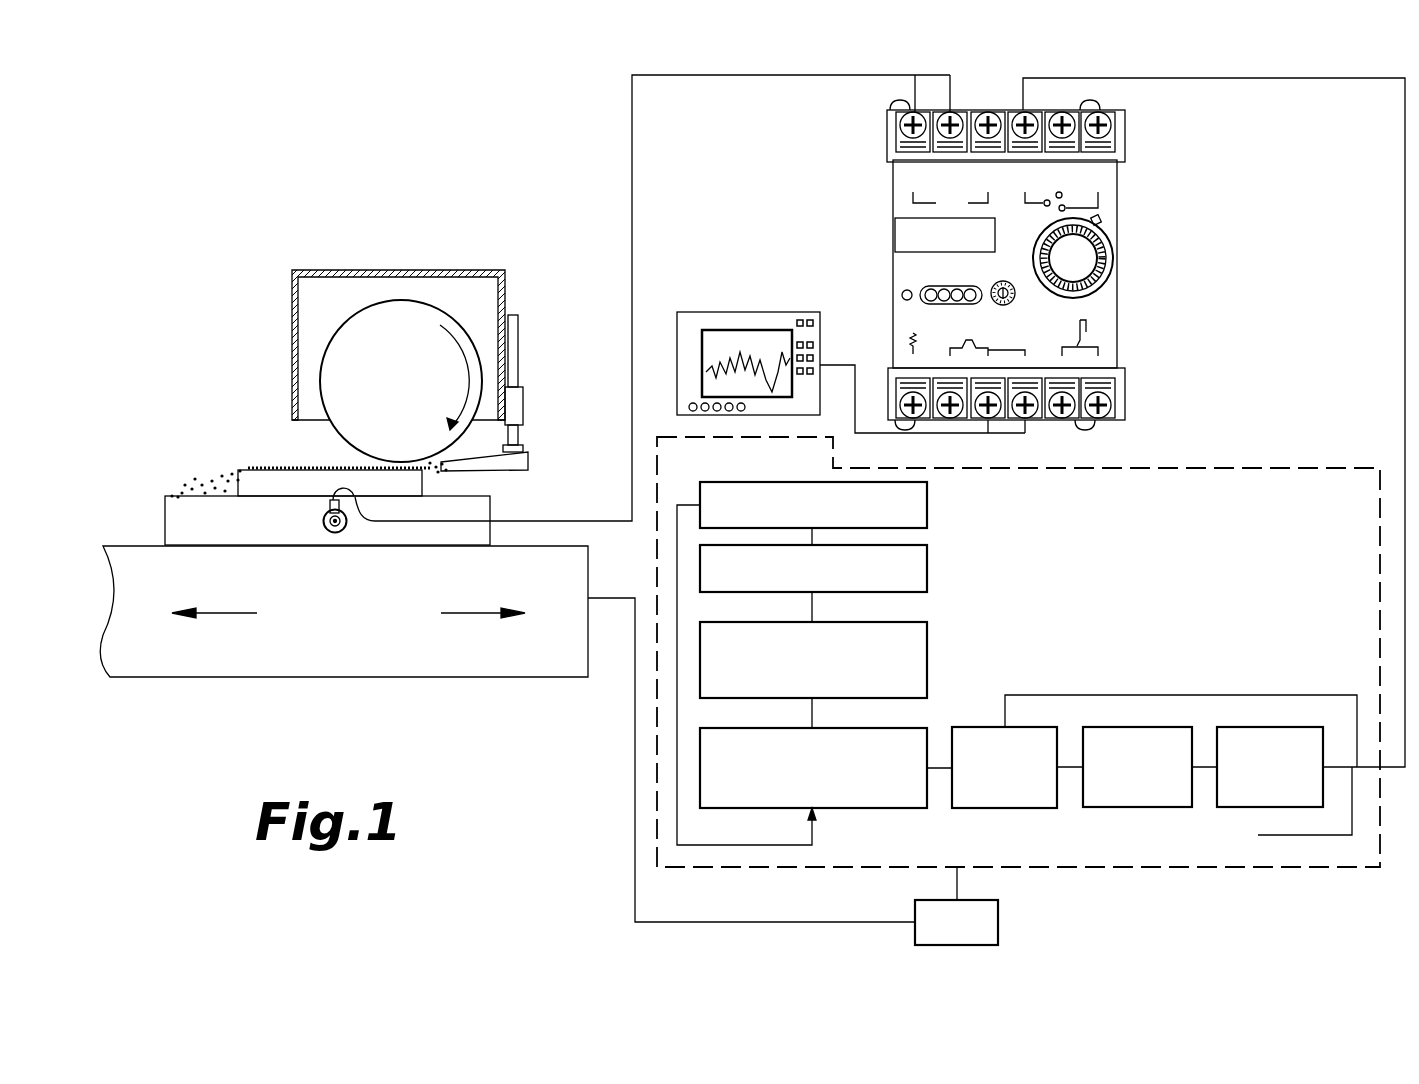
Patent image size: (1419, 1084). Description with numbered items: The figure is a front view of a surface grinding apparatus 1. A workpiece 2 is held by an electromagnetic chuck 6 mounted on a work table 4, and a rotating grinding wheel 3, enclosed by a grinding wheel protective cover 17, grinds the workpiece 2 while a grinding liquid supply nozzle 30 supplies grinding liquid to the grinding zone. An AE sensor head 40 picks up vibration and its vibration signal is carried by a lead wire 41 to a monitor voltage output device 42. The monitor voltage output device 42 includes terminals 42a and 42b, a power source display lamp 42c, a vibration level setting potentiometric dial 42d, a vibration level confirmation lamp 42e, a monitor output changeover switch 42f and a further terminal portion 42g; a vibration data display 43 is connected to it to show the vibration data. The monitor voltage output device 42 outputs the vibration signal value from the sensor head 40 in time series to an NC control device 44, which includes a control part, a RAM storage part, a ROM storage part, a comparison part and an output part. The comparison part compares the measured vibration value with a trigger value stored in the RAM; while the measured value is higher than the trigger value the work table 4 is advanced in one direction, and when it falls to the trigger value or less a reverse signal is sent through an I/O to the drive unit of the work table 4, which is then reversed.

The surface grinding apparatus 1 is at (451, 203).
The workpiece 2 is at (250, 489).
The grinding wheel 3 is at (397, 356).
The work table 4 is at (497, 677).
The electromagnetic chuck 6 is at (165, 512).
The grinding wheel protective cover 17 is at (504, 281).
The grinding liquid supply nozzle 30 is at (520, 472).
The AE sensor head 40 is at (324, 522).
The lead wire 41 is at (593, 521).
The monitor voltage output device 42 is at (1010, 273).
The terminal 42a is at (1121, 110).
The terminal 42b is at (1046, 421).
The power source display lamp 42c is at (903, 291).
The vibration level setting potentiometric dial 42d is at (1113, 252).
The vibration level confirmation lamp 42e is at (918, 297).
The monitor output changeover switch 42f is at (1013, 298).
The lower terminal block 42g is at (1125, 384).
The vibration data display 43 is at (706, 312).
The NC control device 44 is at (1164, 531).